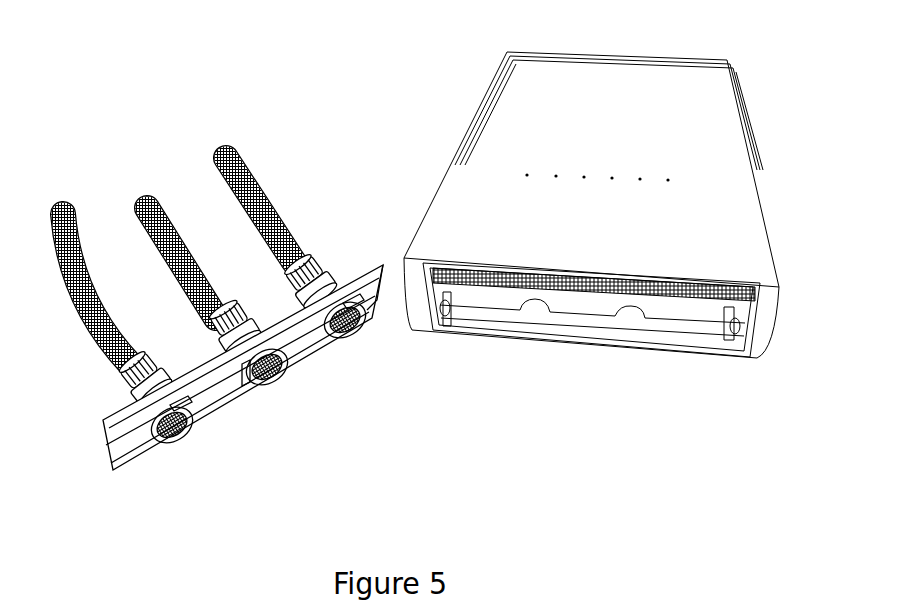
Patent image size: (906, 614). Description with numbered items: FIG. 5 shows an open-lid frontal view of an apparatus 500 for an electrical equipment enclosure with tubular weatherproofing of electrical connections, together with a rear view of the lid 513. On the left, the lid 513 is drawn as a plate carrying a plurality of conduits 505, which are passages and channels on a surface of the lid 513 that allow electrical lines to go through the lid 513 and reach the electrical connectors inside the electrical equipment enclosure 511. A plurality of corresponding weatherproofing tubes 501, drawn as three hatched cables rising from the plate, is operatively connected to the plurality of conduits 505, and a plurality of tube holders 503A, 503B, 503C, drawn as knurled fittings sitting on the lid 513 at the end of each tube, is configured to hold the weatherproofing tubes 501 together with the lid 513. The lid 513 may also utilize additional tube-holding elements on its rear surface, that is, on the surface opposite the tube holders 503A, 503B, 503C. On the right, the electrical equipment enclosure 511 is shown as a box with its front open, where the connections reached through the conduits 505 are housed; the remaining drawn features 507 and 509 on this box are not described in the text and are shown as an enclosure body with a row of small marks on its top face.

The apparatus 500 is at (397, 535).
The weatherproofing tubes 501 is at (208, 153).
The tube holder 503A is at (120, 386).
The tube holder 503B is at (212, 335).
The tube holder 503C is at (308, 261).
The conduits 505 is at (346, 322).
The enclosure 507 is at (538, 87).
The indicator lights 509 is at (517, 170).
The electrical equipment enclosure 511 is at (579, 311).
The lid 513 is at (311, 341).